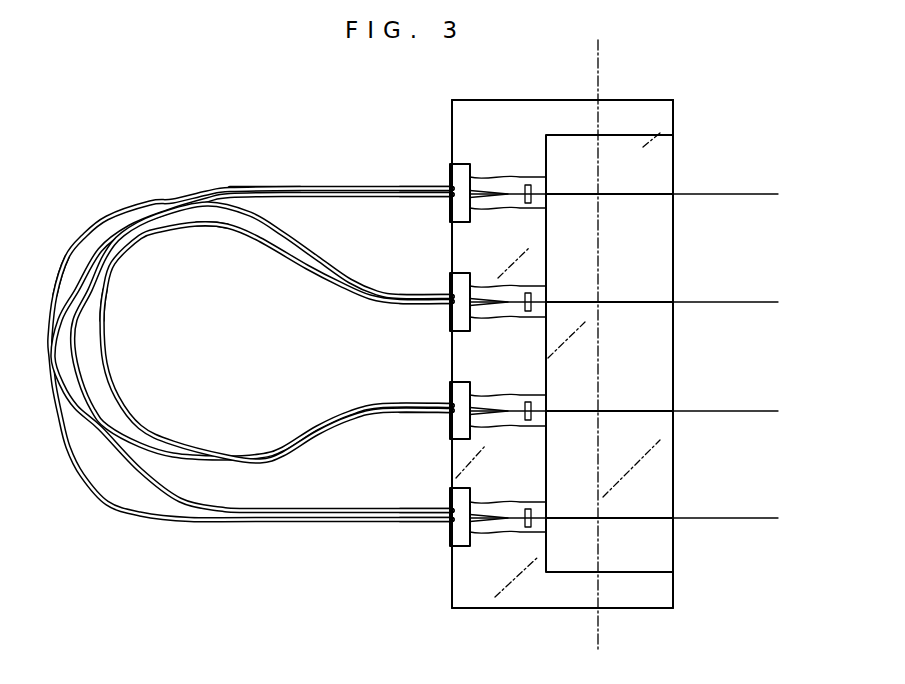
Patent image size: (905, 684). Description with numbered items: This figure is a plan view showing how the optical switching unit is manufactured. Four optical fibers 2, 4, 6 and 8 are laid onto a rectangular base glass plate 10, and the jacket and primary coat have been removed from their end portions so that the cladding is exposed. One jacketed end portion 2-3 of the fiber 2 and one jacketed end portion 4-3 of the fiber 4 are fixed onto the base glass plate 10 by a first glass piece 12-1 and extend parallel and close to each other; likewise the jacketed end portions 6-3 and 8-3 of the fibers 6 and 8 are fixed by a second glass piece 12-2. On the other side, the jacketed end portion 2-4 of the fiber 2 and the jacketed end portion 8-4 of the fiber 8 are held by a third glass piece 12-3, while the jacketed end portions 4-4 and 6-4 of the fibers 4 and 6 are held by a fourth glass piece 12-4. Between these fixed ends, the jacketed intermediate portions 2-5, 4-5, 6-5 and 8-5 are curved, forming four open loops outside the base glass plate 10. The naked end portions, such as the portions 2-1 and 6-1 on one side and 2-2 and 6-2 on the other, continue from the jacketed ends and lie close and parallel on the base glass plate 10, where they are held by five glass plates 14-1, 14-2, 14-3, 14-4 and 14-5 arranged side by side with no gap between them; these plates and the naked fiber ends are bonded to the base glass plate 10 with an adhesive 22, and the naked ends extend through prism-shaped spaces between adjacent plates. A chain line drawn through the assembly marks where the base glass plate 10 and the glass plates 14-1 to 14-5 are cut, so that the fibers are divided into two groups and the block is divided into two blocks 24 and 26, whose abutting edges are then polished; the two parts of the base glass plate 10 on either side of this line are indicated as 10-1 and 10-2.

The optical fiber 2 is at (107, 492).
The naked end portion 2-1 is at (760, 518).
The naked end portion 2-2 is at (760, 302).
The jacketed end portion 2-3 is at (450, 530).
The jacketed end portion 2-4 is at (452, 315).
The jacketed intermediate portion 2-5 is at (195, 228).
The optical fiber 4 is at (180, 503).
The jacketed end portion 4-3 is at (450, 503).
The jacketed end portion 4-4 is at (452, 182).
The jacketed intermediate portion 4-5 is at (255, 186).
The optical fiber 6 is at (343, 428).
The naked end portion 6-1 is at (760, 411).
The naked end portion 6-2 is at (760, 194).
The jacketed end portion 6-3 is at (450, 422).
The jacketed end portion 6-4 is at (452, 208).
The jacketed intermediate portion 6-5 is at (104, 318).
The optical fiber 8 is at (103, 417).
The jacketed end portion 8-3 is at (450, 395).
The jacketed end portion 8-4 is at (452, 290).
The jacketed intermediate portion 8-5 is at (85, 237).
The base glass plate 10 is at (450, 110).
The housing portion 10-1 is at (626, 608).
The housing portion 10-2 is at (500, 608).
The first glass piece 12-1 is at (458, 488).
The second glass piece 12-2 is at (458, 382).
The third glass piece 12-3 is at (458, 273).
The fourth glass piece 12-4 is at (458, 164).
The glass plate 14-1 is at (668, 552).
The glass plate 14-2 is at (668, 470).
The glass plate 14-3 is at (668, 362).
The glass plate 14-4 is at (668, 255).
The glass plate 14-5 is at (668, 170).
The adhesive 22 is at (502, 530).
The block 24 is at (639, 100).
The block 26 is at (529, 100).